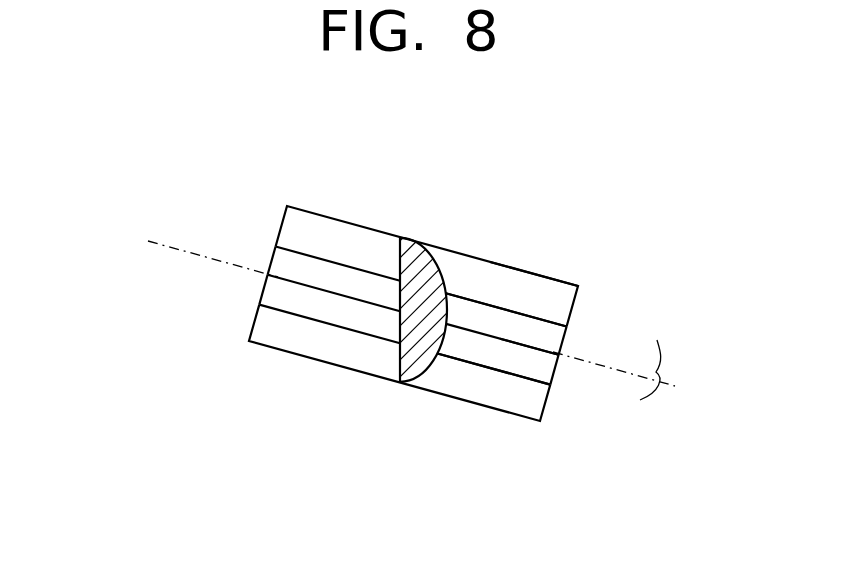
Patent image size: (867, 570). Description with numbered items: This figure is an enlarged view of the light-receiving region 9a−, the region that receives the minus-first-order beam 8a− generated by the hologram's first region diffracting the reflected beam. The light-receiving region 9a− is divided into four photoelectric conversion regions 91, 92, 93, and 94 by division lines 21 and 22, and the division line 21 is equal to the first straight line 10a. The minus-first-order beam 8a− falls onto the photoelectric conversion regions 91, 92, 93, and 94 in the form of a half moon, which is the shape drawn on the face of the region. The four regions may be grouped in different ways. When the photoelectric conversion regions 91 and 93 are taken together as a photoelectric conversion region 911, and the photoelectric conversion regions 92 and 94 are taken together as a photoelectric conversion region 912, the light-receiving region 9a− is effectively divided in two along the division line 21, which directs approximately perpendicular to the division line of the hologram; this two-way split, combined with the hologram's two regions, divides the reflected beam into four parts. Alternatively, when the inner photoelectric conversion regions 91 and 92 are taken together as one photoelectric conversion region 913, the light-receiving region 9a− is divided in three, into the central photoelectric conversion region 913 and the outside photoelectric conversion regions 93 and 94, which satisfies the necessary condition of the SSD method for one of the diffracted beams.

The photoelectric conversion region 911 is at (145, 143).
The photoelectric conversion region 912 is at (125, 278).
The photoelectric conversion region 93 is at (281, 222).
The photoelectric conversion region 91 is at (273, 255).
The photoelectric conversion region 92 is at (262, 288).
The photoelectric conversion region 94 is at (251, 330).
The −1-order beam 8a is at (413, 247).
The light-receiving region 9a is at (530, 274).
The first straight line 10a is at (586, 353).
The photoelectric conversion region 913 is at (663, 375).
The division line 21 is at (540, 352).
The division lines 22 is at (513, 315).